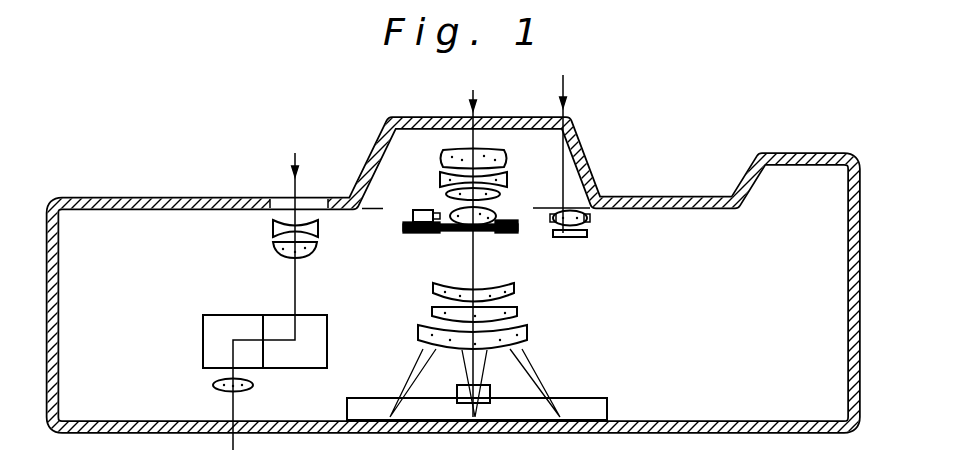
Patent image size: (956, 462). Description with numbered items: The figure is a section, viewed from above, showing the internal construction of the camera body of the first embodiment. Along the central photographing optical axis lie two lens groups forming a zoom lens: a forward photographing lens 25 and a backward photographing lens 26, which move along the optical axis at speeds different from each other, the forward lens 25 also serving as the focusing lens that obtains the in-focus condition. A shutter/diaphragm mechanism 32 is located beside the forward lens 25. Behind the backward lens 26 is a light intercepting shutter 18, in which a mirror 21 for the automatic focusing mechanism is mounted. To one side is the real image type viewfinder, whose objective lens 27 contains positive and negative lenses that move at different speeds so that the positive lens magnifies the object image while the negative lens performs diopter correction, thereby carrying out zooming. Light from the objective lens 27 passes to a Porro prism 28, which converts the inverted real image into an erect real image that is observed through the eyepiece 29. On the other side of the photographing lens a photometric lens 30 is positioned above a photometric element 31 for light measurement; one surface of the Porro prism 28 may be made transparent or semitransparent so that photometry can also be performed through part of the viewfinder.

The light intercepting shutter 18 is at (587, 410).
The mirror 21 is at (490, 396).
The forward photographing lens 25 is at (510, 145).
The backward photographing lens 26 is at (530, 278).
The objective lens 27 is at (322, 216).
The Porro prism 28 is at (313, 330).
The eyepiece 29 is at (253, 387).
The photometric lens 30 is at (594, 194).
The photometric element 31 is at (587, 234).
The shutter/diaphragm mechanism 32 is at (403, 221).